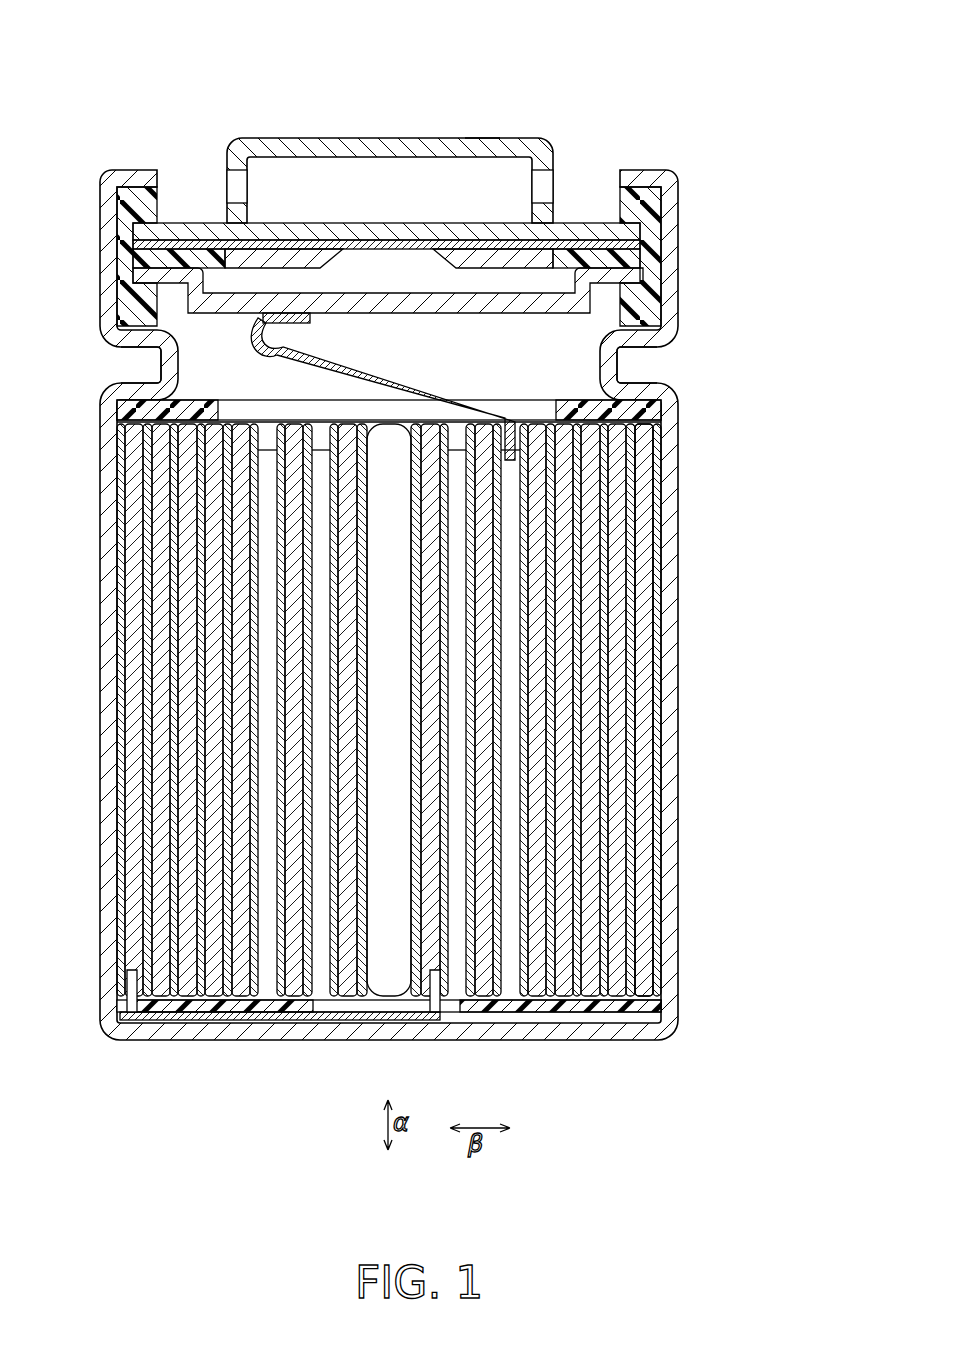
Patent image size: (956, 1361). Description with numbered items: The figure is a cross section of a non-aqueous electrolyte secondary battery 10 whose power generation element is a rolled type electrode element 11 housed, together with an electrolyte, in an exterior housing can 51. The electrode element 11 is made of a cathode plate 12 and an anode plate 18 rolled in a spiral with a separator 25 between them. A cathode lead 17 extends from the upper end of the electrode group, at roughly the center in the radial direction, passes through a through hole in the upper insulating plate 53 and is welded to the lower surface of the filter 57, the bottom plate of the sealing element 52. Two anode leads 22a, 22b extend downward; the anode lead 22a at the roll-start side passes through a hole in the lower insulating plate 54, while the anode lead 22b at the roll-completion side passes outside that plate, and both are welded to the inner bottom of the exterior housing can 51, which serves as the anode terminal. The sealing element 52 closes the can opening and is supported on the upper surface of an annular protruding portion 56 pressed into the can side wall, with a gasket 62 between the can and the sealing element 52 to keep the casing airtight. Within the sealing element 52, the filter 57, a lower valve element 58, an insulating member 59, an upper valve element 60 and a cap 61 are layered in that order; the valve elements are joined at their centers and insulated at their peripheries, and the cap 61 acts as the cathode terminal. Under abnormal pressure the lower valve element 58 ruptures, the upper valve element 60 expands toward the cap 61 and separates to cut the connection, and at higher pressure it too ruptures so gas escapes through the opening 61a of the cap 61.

The battery 10 is at (672, 73).
The rolled type electrode element 11 is at (475, 657).
The cathode plate 12 is at (610, 663).
The cathode lead 17 is at (215, 372).
The anode plate 18 is at (640, 718).
The anode lead 22a is at (417, 1022).
The anode lead 22b is at (187, 1022).
The separator 25 is at (630, 768).
The exterior housing can 51 is at (456, 184).
The sealing element 52 is at (427, 133).
The insulating plate 53 is at (655, 410).
The insulating plate 54 is at (660, 1010).
The protruding portion 56 is at (620, 362).
The filter 57 is at (580, 303).
The lower valve element 58 is at (315, 262).
The insulating member 59 is at (182, 229).
The upper valve element 60 is at (258, 239).
The cap 61 is at (482, 137).
The opening 61a is at (550, 184).
The gasket 62 is at (661, 170).